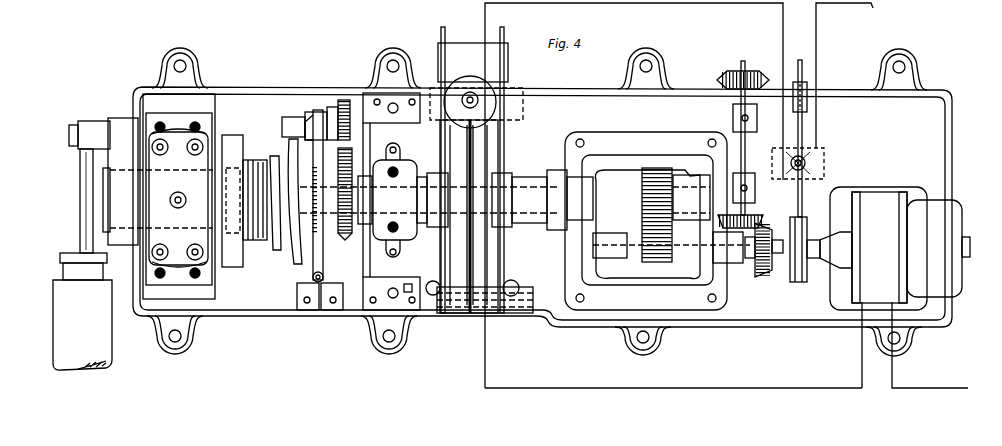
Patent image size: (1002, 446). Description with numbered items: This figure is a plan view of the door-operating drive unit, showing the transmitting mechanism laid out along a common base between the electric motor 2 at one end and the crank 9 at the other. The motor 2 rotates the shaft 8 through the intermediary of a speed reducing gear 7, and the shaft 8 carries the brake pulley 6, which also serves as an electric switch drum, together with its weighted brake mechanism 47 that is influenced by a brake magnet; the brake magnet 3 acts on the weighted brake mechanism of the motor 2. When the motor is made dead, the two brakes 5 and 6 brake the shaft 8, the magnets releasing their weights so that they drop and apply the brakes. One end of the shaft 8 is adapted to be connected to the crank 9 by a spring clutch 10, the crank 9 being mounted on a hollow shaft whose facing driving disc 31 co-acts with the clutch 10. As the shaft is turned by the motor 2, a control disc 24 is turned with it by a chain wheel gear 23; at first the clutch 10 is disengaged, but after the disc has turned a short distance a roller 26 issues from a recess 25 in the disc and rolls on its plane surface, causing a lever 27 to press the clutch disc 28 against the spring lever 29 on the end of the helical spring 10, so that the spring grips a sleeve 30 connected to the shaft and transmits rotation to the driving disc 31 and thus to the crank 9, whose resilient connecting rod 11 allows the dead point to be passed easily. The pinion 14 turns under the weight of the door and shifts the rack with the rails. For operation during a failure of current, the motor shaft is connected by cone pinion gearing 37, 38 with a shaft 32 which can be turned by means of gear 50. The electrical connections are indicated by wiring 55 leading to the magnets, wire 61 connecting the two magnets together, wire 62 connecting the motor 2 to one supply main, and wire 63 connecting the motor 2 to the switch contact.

The electric motor 2 is at (888, 248).
The brake magnet 3 is at (815, 168).
The brake 5 is at (347, 53).
The brake pulley 6 is at (837, 53).
The speed reducing gear 7 is at (511, 42).
The shaft 8 is at (346, 235).
The crank 9 is at (158, 181).
The spring clutch 10 is at (264, 147).
The connecting rod 11 is at (82, 245).
The pinion 14 is at (476, 102).
The chain wheel gear 23 is at (352, 190).
The control disc 24 is at (343, 104).
The recess 25 is at (332, 118).
The roller 26 is at (318, 122).
The lever 27 is at (323, 258).
The clutch disc 28 is at (299, 256).
The spring lever 29 is at (278, 262).
The sleeve 30 is at (262, 248).
The driving disc 31 is at (232, 201).
The shaft 32 is at (748, 142).
The cone pinion 37 is at (759, 216).
The cone pinion 38 is at (765, 276).
The weighted brake mechanism 47 is at (473, 170).
The gear 50 is at (745, 70).
The wiring 55 is at (874, 8).
The wire 61 is at (683, 4).
The wire 62 is at (930, 390).
The wire 63 is at (684, 388).